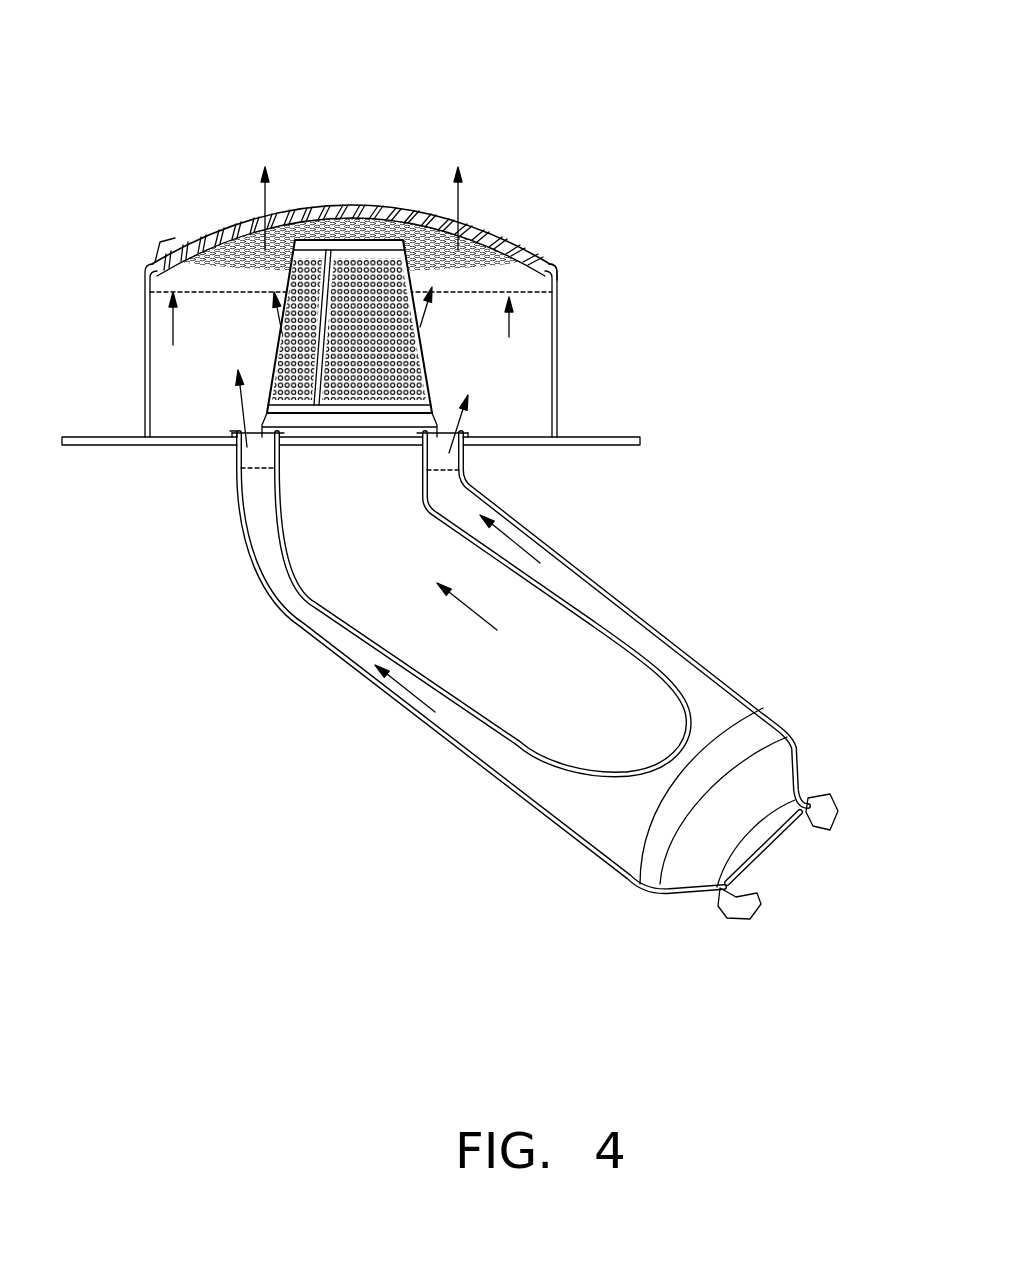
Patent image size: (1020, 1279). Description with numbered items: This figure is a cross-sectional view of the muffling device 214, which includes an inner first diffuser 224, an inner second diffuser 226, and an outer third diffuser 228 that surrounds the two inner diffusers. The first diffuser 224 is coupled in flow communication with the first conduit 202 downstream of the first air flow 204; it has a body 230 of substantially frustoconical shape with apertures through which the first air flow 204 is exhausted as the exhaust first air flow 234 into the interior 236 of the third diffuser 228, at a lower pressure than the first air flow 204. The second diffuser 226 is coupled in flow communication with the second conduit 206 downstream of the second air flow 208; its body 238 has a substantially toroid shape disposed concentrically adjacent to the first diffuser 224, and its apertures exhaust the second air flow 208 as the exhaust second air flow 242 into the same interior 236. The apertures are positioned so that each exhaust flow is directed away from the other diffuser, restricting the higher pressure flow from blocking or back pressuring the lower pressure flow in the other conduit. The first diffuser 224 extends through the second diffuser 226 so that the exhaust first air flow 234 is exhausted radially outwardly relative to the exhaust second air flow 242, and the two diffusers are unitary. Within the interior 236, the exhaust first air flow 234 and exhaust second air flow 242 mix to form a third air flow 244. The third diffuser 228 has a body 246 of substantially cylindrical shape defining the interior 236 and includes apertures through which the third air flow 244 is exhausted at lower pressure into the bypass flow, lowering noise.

The first conduit 202 is at (648, 648).
The first air flow 204 is at (478, 620).
The second conduit 206 is at (645, 608).
The second air flow 208 is at (402, 710).
The muffling device 214 is at (524, 106).
The first diffuser 224 is at (290, 278).
The second diffuser 226 is at (232, 433).
The third diffuser 228 is at (500, 228).
The body 230 is at (268, 287).
The exhaust first air flow 234 is at (417, 323).
The interior 236 is at (178, 383).
The body 238 is at (232, 455).
The exhaust second air flow 242 is at (463, 420).
The third air flow 244 is at (510, 337).
The body 246 is at (557, 267).